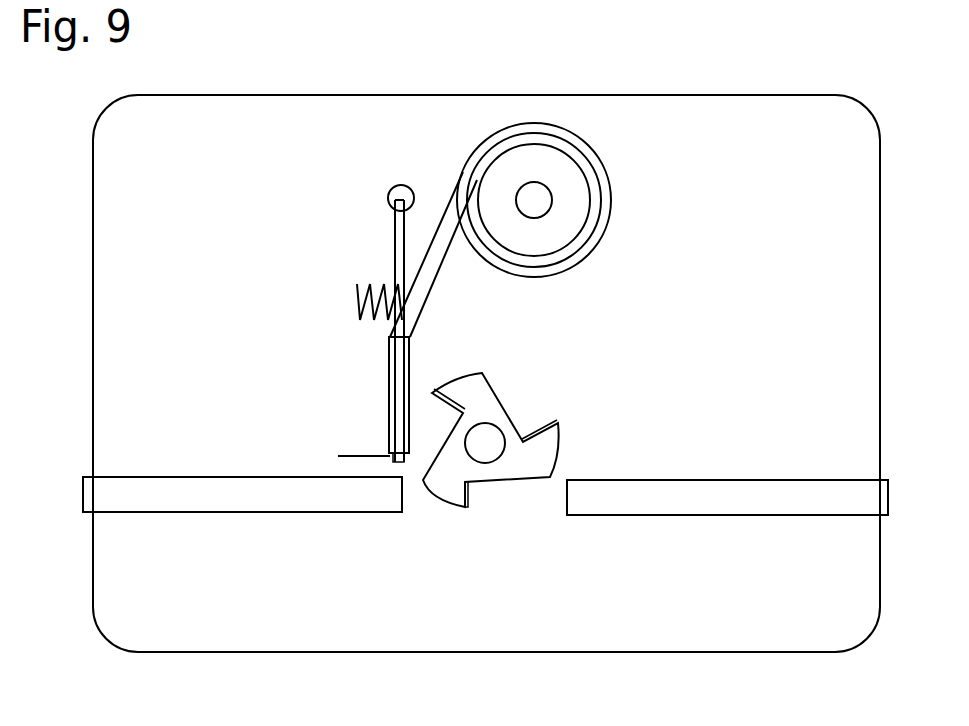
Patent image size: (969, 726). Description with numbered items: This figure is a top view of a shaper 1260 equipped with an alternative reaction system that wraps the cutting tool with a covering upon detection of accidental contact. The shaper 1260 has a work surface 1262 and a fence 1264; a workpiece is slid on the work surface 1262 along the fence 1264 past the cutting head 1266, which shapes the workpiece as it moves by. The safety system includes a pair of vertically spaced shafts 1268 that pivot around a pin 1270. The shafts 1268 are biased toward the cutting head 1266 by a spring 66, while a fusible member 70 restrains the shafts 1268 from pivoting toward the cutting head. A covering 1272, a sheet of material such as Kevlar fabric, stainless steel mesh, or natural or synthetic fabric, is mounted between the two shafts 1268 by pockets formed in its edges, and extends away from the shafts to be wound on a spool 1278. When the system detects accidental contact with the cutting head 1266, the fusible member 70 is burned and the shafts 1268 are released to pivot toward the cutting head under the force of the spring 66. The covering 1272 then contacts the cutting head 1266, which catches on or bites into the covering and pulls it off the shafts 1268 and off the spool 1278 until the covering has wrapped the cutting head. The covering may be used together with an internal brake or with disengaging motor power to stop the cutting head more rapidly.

The shaper 1260 is at (797, 77).
The work surface 1262 is at (607, 613).
The fence 1264 is at (612, 480).
The cutting head 1266 is at (450, 503).
The shafts 1268 is at (394, 240).
The pin 1270 is at (390, 192).
The covering 1272 is at (432, 283).
The spool 1278 is at (570, 209).
The spring 66 is at (357, 302).
The fusible member 70 is at (352, 454).